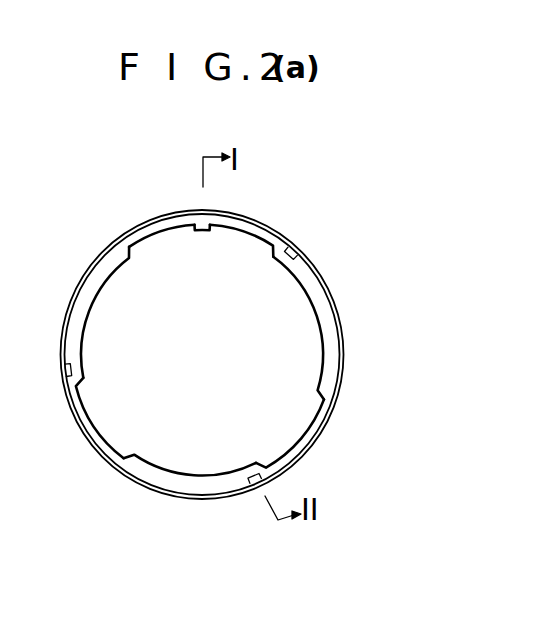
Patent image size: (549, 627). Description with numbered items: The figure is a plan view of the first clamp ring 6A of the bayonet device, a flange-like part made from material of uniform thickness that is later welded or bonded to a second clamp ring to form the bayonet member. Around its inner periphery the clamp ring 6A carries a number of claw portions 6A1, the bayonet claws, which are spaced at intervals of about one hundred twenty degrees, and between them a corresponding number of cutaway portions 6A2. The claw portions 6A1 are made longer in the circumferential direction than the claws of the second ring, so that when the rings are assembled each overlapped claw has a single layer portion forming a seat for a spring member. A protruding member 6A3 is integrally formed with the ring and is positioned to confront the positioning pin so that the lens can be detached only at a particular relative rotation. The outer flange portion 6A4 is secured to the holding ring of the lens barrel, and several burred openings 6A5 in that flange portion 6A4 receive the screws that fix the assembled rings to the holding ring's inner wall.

The first clamp ring 6A is at (225, 376).
The claw portions 6A1 is at (330, 348).
The cutaway portions 6A2 is at (242, 229).
The protruding member 6A3 is at (204, 232).
The flange portion 6A4 is at (318, 266).
The burred openings 6A5 is at (252, 477).